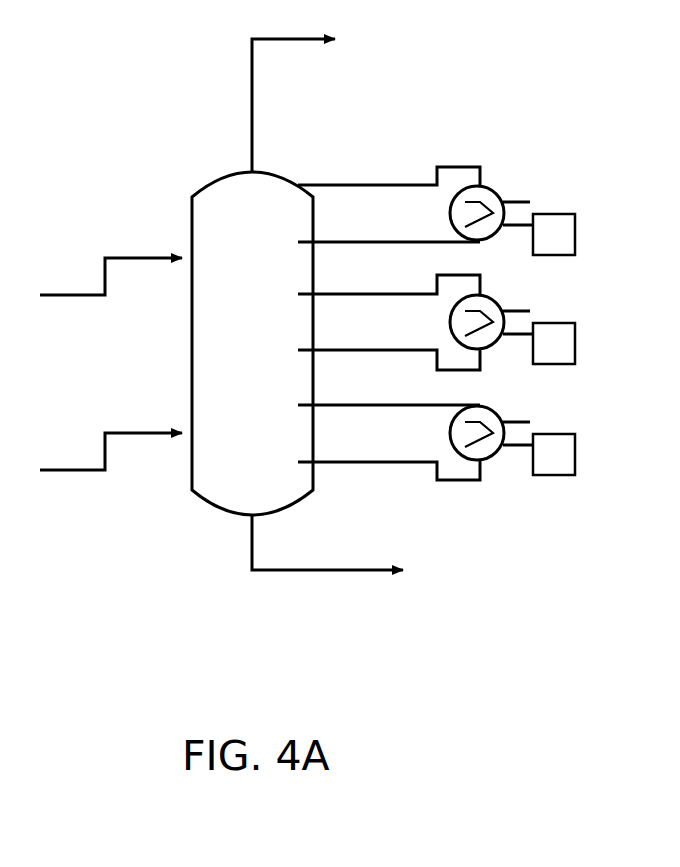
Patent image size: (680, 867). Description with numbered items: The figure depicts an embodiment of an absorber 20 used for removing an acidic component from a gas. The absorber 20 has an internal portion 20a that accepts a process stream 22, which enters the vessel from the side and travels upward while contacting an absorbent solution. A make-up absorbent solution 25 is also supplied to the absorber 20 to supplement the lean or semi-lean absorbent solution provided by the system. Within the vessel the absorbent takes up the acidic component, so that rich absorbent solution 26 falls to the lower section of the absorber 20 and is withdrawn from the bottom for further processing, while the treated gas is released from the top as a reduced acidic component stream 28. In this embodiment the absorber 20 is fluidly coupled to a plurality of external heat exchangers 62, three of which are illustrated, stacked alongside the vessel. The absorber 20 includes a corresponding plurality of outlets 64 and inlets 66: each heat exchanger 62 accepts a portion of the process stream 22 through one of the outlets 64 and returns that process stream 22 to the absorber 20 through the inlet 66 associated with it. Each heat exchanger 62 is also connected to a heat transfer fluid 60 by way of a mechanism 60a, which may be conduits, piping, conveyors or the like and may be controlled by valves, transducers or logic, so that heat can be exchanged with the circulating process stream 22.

The absorber 20 is at (156, 343).
The internal portion 20a is at (192, 372).
The process stream 22 is at (77, 470).
The make-up absorbent solution 25 is at (76, 293).
The rich absorbent solution 26 is at (252, 545).
The reduced acidic component stream 28 is at (252, 117).
The heat transfer fluid 60 is at (573, 355).
The mechanism 60a is at (572, 255).
The heat exchanger 62 is at (497, 202).
The outlet 64 is at (302, 243).
The inlet 66 is at (302, 185).